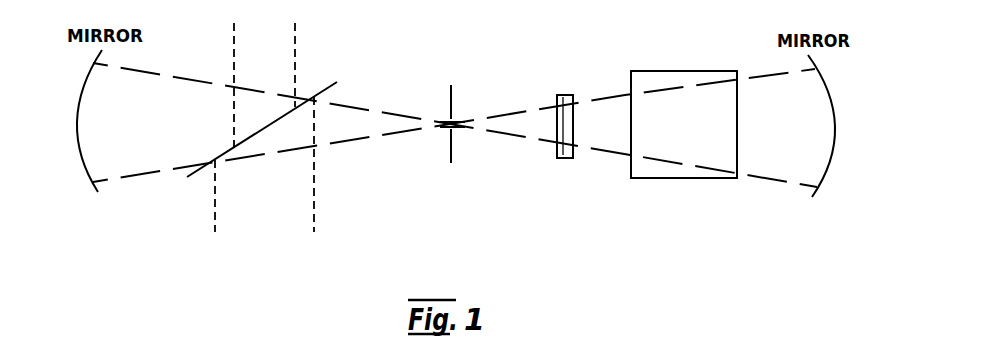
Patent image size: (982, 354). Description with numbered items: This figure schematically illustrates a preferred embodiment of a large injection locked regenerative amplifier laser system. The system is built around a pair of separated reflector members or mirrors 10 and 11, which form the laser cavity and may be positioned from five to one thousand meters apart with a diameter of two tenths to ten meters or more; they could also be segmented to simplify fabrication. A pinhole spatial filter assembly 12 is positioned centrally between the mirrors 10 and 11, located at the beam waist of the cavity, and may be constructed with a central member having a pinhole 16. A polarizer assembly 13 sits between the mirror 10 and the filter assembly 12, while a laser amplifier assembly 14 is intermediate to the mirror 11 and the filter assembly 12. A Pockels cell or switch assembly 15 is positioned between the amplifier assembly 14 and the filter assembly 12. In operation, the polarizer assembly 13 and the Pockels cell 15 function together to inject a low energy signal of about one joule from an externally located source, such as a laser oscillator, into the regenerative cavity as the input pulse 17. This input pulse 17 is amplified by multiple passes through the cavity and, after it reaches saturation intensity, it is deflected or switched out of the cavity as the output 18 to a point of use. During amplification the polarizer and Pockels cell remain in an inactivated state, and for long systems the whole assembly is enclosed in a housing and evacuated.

The mirror 10 is at (77, 122).
The mirror 11 is at (835, 107).
The pinhole spatial filter assembly 12 is at (452, 145).
The polarizer assembly 13 is at (326, 89).
The laser amplifier assembly 14 is at (631, 165).
The Pockels cell or switch assembly 15 is at (557, 99).
The pinhole 16 is at (453, 120).
The input pulse 17 is at (262, 42).
The output pulse 18 is at (273, 197).